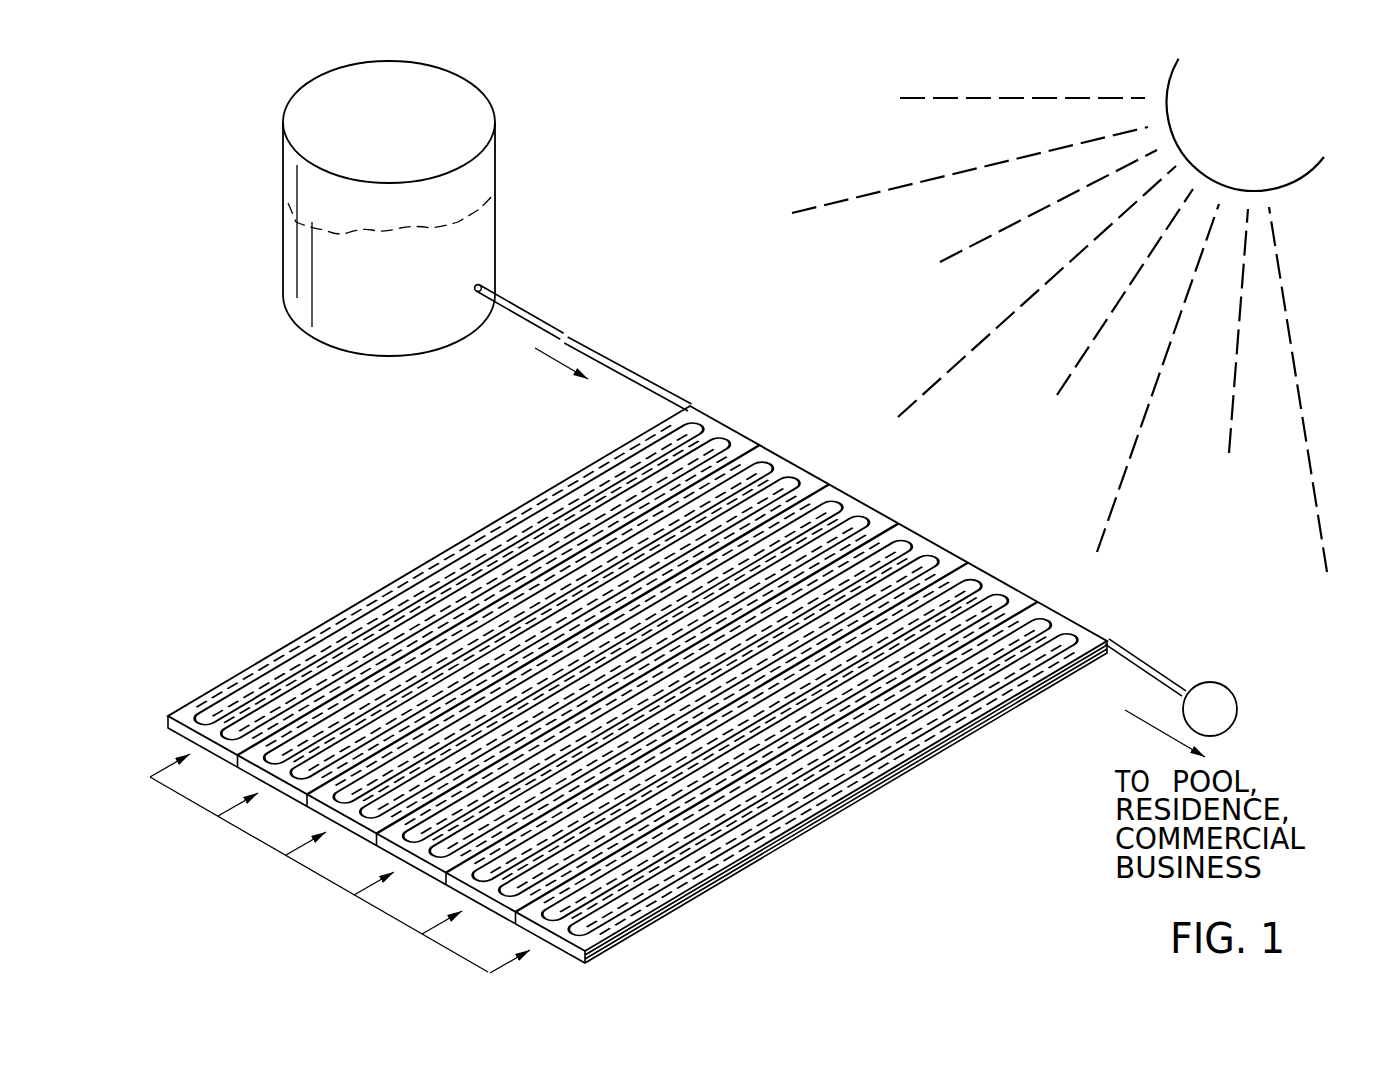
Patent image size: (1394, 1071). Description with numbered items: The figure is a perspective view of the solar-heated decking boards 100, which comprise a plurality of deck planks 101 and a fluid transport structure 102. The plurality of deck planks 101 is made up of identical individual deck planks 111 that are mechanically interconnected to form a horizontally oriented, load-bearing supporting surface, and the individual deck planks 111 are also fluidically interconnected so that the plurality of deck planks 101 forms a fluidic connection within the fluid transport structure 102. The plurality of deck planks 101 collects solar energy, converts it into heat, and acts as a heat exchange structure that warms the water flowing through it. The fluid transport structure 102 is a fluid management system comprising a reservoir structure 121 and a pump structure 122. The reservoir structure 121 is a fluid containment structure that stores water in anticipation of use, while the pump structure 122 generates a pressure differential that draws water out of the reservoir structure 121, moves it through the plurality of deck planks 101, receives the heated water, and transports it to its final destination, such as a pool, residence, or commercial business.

The solar-heated decking boards 100 is at (169, 163).
The plurality of deck planks 101 is at (842, 822).
The fluid transport structure 102 is at (215, 493).
The individual deck plank 111 is at (322, 877).
The reservoir structure 121 is at (495, 197).
The pump structure 122 is at (1216, 683).